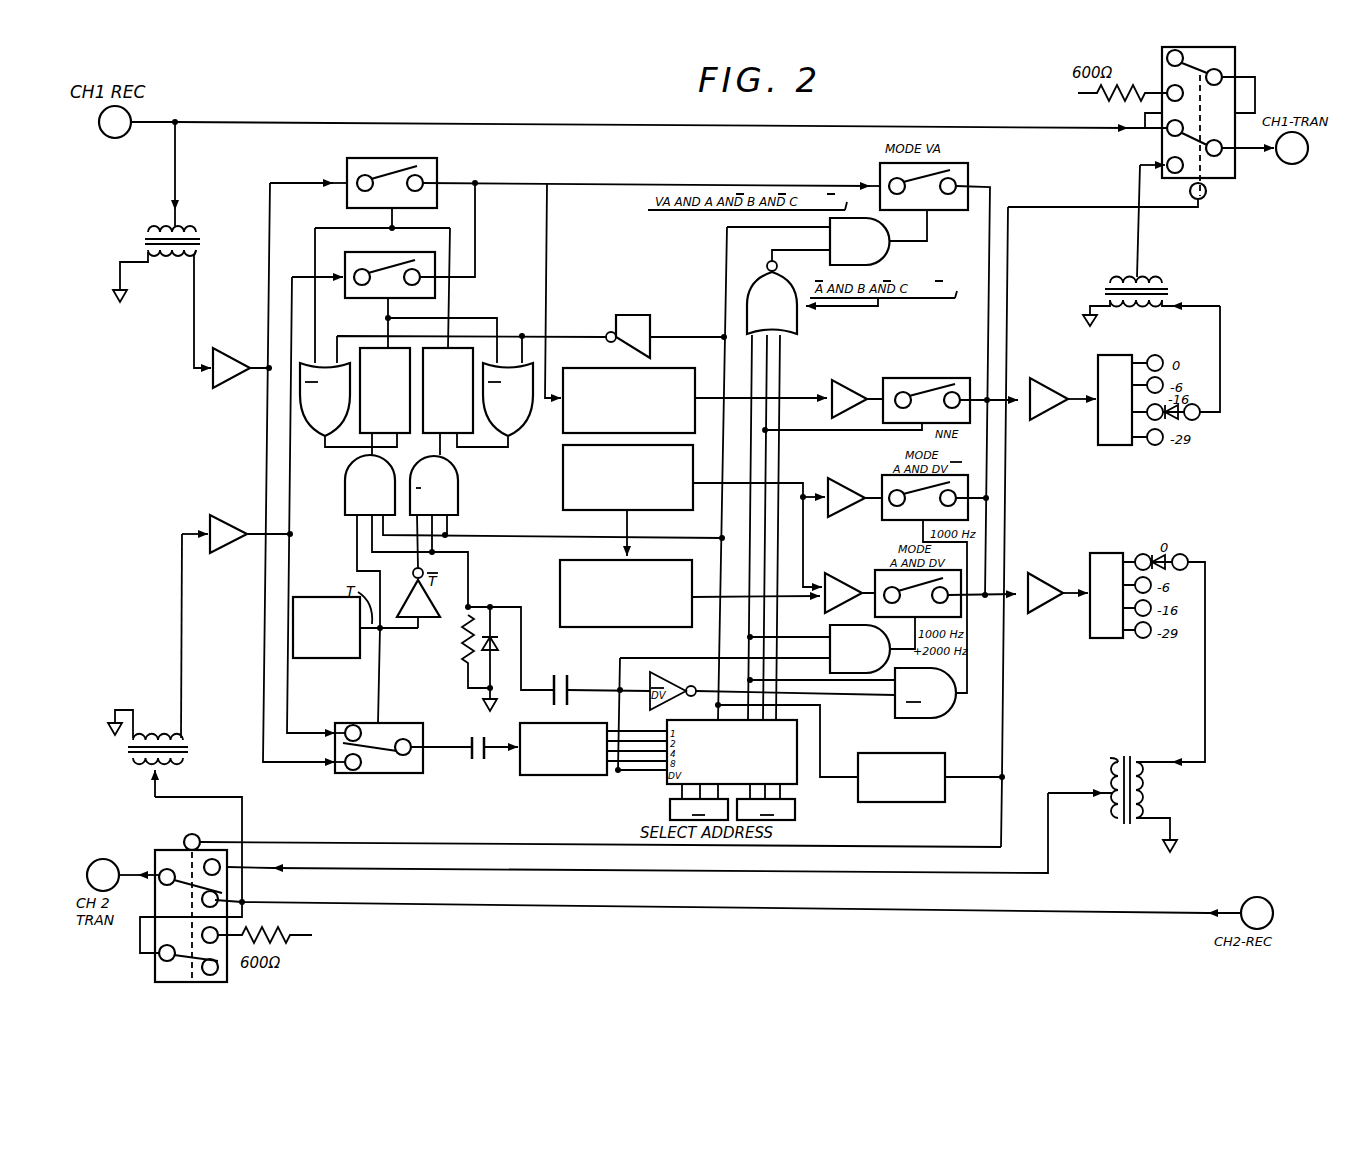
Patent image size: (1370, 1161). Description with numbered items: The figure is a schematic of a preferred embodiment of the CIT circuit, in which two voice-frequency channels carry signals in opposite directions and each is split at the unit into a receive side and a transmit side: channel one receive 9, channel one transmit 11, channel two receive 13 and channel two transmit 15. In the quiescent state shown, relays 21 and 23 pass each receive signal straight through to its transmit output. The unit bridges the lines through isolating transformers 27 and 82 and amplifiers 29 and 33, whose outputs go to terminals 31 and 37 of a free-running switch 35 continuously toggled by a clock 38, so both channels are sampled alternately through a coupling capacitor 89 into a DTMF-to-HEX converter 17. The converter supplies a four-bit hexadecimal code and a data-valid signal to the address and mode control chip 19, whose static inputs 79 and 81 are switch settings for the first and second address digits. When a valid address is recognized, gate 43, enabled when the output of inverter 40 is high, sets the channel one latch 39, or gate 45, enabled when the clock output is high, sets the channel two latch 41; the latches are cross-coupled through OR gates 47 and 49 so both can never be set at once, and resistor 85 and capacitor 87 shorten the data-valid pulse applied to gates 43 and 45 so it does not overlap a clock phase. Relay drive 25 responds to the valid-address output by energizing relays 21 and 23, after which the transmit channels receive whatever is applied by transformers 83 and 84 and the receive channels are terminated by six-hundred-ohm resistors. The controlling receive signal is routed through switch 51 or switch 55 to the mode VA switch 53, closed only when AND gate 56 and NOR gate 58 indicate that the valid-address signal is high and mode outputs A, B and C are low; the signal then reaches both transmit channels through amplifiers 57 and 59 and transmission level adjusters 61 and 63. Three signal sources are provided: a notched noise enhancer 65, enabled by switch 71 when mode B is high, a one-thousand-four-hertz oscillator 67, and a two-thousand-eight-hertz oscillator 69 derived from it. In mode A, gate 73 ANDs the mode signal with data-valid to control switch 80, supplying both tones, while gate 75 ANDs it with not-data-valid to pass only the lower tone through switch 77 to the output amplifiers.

The CH1-REC 9 is at (130, 112).
The CH1-TRAN 11 is at (1290, 165).
The CH2-REC 13 is at (1259, 900).
The CH2-TRAN 15 is at (115, 860).
The DTMF-to-HEX converter 17 is at (593, 777).
The address and mode control chip 19 is at (800, 778).
The relay 21 is at (1222, 200).
The relay 23 is at (160, 852).
The relay drive 25 is at (936, 756).
The isolating transformer 27 is at (143, 241).
The amplifier 29 is at (238, 391).
The terminal 31 is at (356, 773).
The amplifier 33 is at (226, 556).
The free-running switch 35 is at (378, 761).
The terminal 37 is at (356, 722).
The clock 38 is at (308, 597).
The latch 39 is at (457, 436).
The inverter 40 is at (412, 592).
The latch 41 is at (390, 436).
The gate 43 is at (458, 498).
The gate 45 is at (345, 498).
The OR gate 47 is at (312, 438).
The OR gate 49 is at (520, 438).
The switch 51 is at (356, 158).
The mode VA switch 53 is at (975, 178).
The switch 55 is at (350, 258).
The AND gate 56 is at (880, 228).
The amplifier 57 is at (1038, 380).
The NOR gate 58 is at (767, 283).
The amplifier 59 is at (1040, 582).
The transmission level adjuster 61 is at (1128, 350).
The transmission level adjuster 63 is at (1110, 560).
The notched noise enhancer 65 is at (686, 370).
The 1004 Hz oscillator 67 is at (690, 458).
The 2008 Hz oscillator 69 is at (690, 574).
The switch 71 is at (924, 378).
The gate 73 is at (828, 634).
The gate 75 is at (957, 706).
The switch 77 is at (882, 516).
The static input 79 is at (668, 810).
The switch 80 is at (875, 572).
The static input 81 is at (796, 810).
The isolating transformer 82 is at (160, 726).
The transformer 83 is at (1160, 276).
The transformer 84 is at (1131, 761).
The resistor 85 is at (463, 654).
The capacitor 87 is at (561, 677).
The coupling capacitor 89 is at (476, 762).